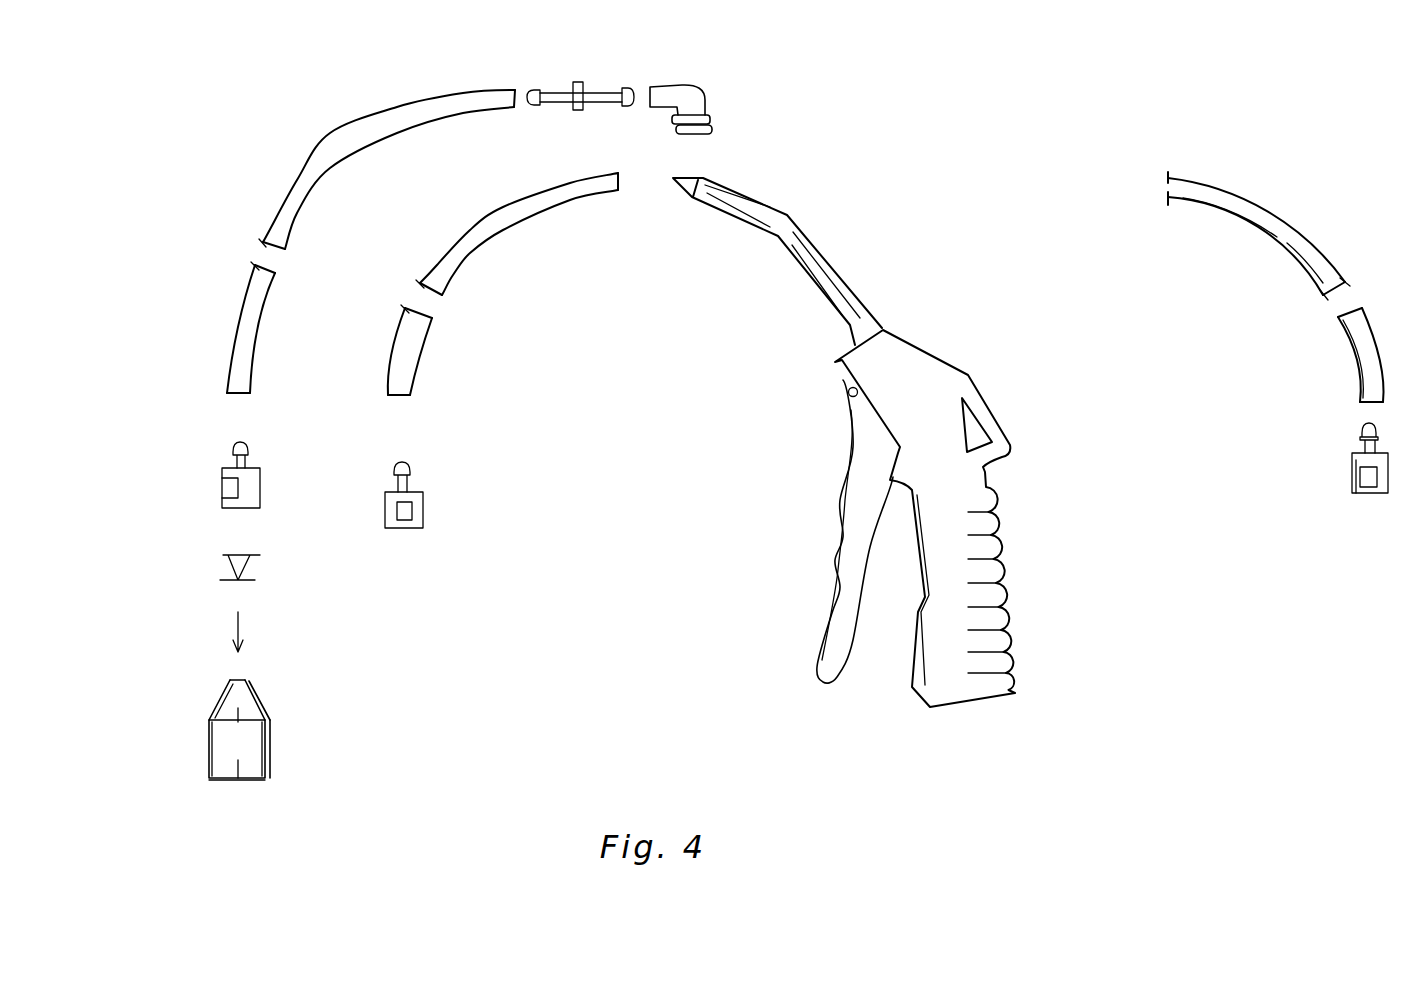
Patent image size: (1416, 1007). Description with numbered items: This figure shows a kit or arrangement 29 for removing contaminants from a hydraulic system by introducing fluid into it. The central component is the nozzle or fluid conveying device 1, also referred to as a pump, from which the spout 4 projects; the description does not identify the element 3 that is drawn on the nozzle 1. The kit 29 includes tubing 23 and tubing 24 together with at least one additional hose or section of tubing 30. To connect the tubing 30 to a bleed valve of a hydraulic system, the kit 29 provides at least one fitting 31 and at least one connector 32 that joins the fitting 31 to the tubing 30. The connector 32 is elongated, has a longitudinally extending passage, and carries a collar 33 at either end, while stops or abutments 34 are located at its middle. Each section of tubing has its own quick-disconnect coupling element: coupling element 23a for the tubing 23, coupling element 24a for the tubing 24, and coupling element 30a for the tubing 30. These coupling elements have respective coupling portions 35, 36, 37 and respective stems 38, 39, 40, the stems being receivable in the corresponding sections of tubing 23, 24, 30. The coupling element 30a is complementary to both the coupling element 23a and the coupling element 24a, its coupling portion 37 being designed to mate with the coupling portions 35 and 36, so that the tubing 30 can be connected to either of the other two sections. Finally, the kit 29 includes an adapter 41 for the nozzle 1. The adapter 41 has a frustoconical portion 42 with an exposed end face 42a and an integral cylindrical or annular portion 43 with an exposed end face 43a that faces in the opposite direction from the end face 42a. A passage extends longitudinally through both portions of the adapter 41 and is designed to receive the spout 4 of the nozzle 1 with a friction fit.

The nozzle or fluid conveying device 1 is at (876, 442).
The trigger 3 is at (840, 517).
The spout 4 is at (830, 263).
The tubing 23 is at (428, 337).
The quick-disconnect coupling element 23a is at (453, 523).
The tubing 24 is at (1347, 337).
The quick-disconnect coupling element 24a is at (1315, 489).
The kit 29 is at (1330, 172).
The additional hose or section of tubing 30 is at (272, 290).
The quick-disconnect coupling element 30a is at (248, 515).
The fitting 31 is at (708, 103).
The connector 32 is at (552, 92).
The collar 33 is at (537, 87).
The stops or abutments 34 is at (578, 82).
The coupling portion 35 is at (423, 510).
The coupling portion 36 is at (1352, 473).
The coupling portion 37 is at (262, 495).
The stem 38 is at (410, 470).
The stem 39 is at (1363, 435).
The stem 40 is at (247, 452).
The adapter 41 is at (257, 743).
The frustoconical portion 42 is at (258, 695).
The exposed end face 42a is at (238, 680).
The cylindrical or annular portion 43 is at (268, 745).
The exposed end face 43a is at (247, 780).